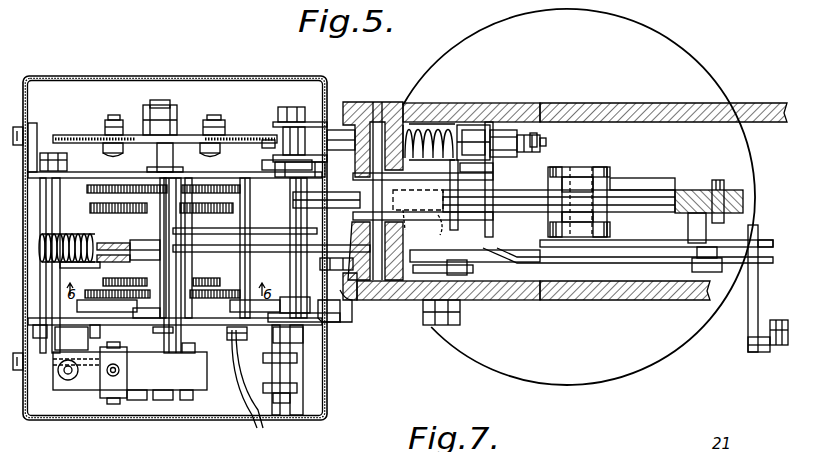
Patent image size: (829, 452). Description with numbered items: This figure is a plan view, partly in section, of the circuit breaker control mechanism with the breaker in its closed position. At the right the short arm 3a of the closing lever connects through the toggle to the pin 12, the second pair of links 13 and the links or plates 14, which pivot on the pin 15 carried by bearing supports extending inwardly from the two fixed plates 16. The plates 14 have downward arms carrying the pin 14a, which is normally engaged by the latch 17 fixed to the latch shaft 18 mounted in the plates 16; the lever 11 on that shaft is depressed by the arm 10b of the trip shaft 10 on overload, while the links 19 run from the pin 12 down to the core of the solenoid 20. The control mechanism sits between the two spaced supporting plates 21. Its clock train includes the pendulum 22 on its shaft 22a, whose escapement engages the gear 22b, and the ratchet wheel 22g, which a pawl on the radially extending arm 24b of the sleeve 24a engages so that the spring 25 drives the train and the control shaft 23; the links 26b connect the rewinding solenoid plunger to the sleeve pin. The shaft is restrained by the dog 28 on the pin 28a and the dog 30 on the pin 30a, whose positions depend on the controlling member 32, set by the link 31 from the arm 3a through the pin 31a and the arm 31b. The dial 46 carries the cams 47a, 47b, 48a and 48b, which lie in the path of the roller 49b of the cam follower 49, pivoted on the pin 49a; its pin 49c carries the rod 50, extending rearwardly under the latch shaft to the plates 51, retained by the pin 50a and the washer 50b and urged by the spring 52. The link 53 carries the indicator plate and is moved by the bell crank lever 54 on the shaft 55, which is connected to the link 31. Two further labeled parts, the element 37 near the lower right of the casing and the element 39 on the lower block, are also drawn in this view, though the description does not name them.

The short arm of the closing lever 3a is at (733, 190).
The trip shaft 10 is at (778, 348).
The arm of the trip shaft 10b is at (753, 260).
The lever 11 is at (758, 242).
The pin 12 is at (584, 177).
The second pair of links 13 is at (530, 195).
The links or plates 14 is at (435, 190).
The pin 14a is at (422, 228).
The pin 15 is at (360, 118).
The fixed plates 16 is at (605, 110).
The latch 17 is at (347, 208).
The latch shaft 18 is at (507, 112).
The links 19 is at (614, 173).
The solenoid 20 is at (678, 63).
The supporting plates 21 is at (75, 176).
The pendulum 22 is at (80, 198).
The shaft 22a is at (228, 295).
The gear 22b is at (225, 282).
The ratchet wheel 22g is at (232, 206).
The control shaft 23 is at (174, 156).
The sleeve 24a is at (137, 245).
The radially extending arm 24b is at (236, 213).
The spring 25 is at (50, 253).
The links 26b is at (88, 268).
The dog 28 is at (87, 316).
The pin 28a is at (88, 372).
The dog 30 is at (222, 323).
The pin 30a is at (242, 342).
The link 31 is at (532, 276).
The pin 31a is at (195, 250).
The arm 31b is at (202, 248).
The controlling member 32 is at (130, 318).
The cable 37 is at (252, 390).
The block 39 is at (120, 372).
The dial 46 is at (78, 133).
The cam 47a is at (266, 162).
The cam 47b is at (43, 142).
The cam 48a is at (137, 150).
The cam 48b is at (187, 142).
The cam follower 49 is at (290, 68).
The pin 49a is at (293, 107).
The roller 49b is at (277, 140).
The pin 49c is at (325, 97).
The rod 50 is at (430, 124).
The pin 50a is at (537, 135).
The washer 50b is at (540, 146).
The plates 51 is at (540, 125).
The spring 52 is at (452, 110).
The link 53 is at (320, 312).
The bell crank lever 54 is at (337, 262).
The shaft 55 is at (458, 310).